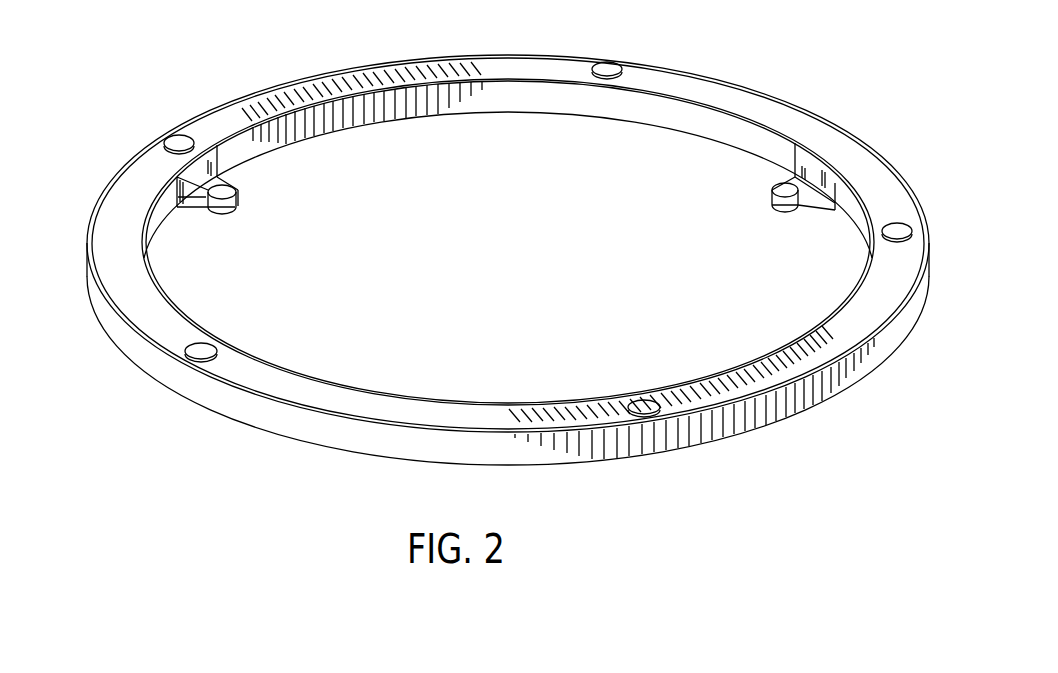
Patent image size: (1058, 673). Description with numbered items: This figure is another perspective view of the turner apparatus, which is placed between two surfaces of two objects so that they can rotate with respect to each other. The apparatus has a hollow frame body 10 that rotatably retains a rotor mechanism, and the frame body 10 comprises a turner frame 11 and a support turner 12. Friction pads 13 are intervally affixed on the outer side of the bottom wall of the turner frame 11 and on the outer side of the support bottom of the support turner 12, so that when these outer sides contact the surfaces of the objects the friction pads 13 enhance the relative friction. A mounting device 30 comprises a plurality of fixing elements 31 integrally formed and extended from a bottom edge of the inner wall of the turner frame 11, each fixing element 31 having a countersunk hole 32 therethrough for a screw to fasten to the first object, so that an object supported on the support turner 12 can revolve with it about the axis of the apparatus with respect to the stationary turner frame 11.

The frame body 10 is at (820, 423).
The turner frame 11 is at (220, 402).
The support turner 12 is at (678, 80).
The friction pads 13 is at (593, 70).
The mounting device 30 is at (830, 168).
The fixing elements 31 is at (237, 198).
The countersunk hole 32 is at (805, 190).